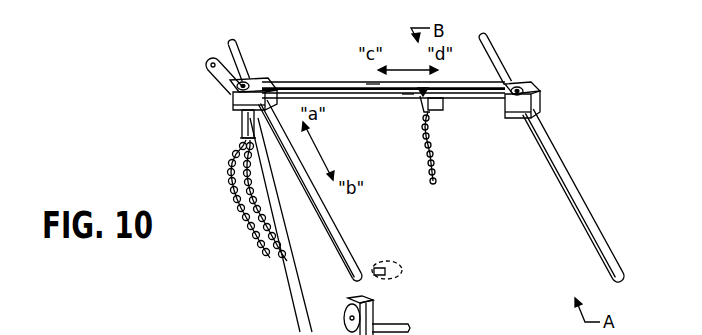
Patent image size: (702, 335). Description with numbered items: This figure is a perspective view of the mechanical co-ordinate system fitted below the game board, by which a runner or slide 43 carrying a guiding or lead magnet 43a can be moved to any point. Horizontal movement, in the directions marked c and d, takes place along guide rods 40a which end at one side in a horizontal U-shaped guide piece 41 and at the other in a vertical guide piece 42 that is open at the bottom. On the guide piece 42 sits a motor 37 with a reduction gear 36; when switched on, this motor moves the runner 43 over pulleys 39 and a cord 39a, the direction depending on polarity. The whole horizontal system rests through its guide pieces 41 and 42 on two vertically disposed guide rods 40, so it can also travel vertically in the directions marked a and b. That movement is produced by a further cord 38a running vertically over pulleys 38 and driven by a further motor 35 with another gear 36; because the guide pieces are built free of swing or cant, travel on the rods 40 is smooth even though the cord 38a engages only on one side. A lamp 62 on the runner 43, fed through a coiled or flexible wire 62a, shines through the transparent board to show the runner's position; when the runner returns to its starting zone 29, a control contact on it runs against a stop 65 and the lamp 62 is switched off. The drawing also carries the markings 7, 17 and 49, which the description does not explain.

The frame 7 is at (497, 334).
The springs 17 is at (268, 225).
The zone 29 is at (393, 265).
The motor 35 is at (398, 329).
The reduction gear 36 is at (235, 95).
The motor 37 is at (242, 128).
The pulleys 38 is at (206, 67).
The cord 38a is at (307, 250).
The pulleys 39 is at (250, 80).
The cord 39a is at (409, 96).
The guide rods 40 is at (334, 229).
The guide rods 40a is at (372, 88).
The horizontal U-shaped guide piece 41 is at (533, 103).
The vertical guide piece 42 is at (283, 92).
The runner 43 is at (427, 115).
The guiding or lead magnet 43a is at (428, 89).
The member 49 is at (533, 329).
The lamp 62 is at (436, 103).
The coiled or flexible wire 62a is at (436, 176).
The stop 65 is at (386, 274).